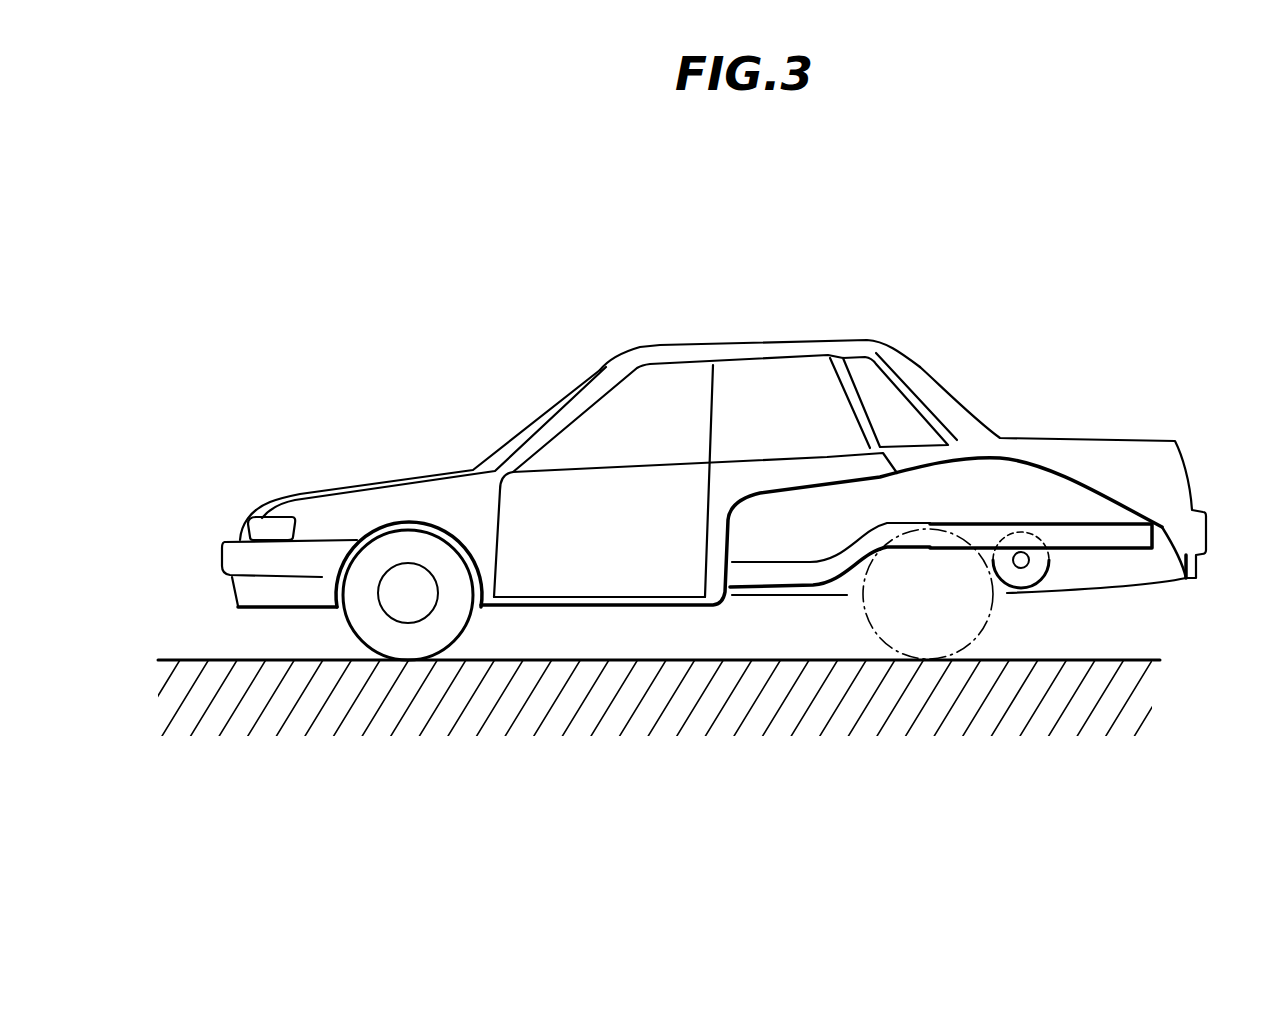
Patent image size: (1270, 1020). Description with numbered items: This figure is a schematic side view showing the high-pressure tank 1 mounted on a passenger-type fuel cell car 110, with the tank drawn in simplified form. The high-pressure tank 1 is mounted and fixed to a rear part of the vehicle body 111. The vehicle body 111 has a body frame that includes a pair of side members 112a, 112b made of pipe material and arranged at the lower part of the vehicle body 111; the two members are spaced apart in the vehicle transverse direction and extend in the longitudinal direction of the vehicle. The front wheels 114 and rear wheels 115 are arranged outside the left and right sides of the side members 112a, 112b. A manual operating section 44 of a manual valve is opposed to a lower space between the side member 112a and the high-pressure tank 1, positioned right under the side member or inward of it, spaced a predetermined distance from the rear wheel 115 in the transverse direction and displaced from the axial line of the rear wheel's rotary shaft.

The fuel cell car 110 is at (818, 298).
The vehicle body 111 is at (688, 350).
The front wheels 114 is at (405, 613).
The rear wheels 115 is at (914, 645).
The high-pressure tank 1 is at (1037, 582).
The manual operating section 44 is at (1020, 567).
The side member 112a is at (1117, 538).
The side member 112b is at (1041, 536).